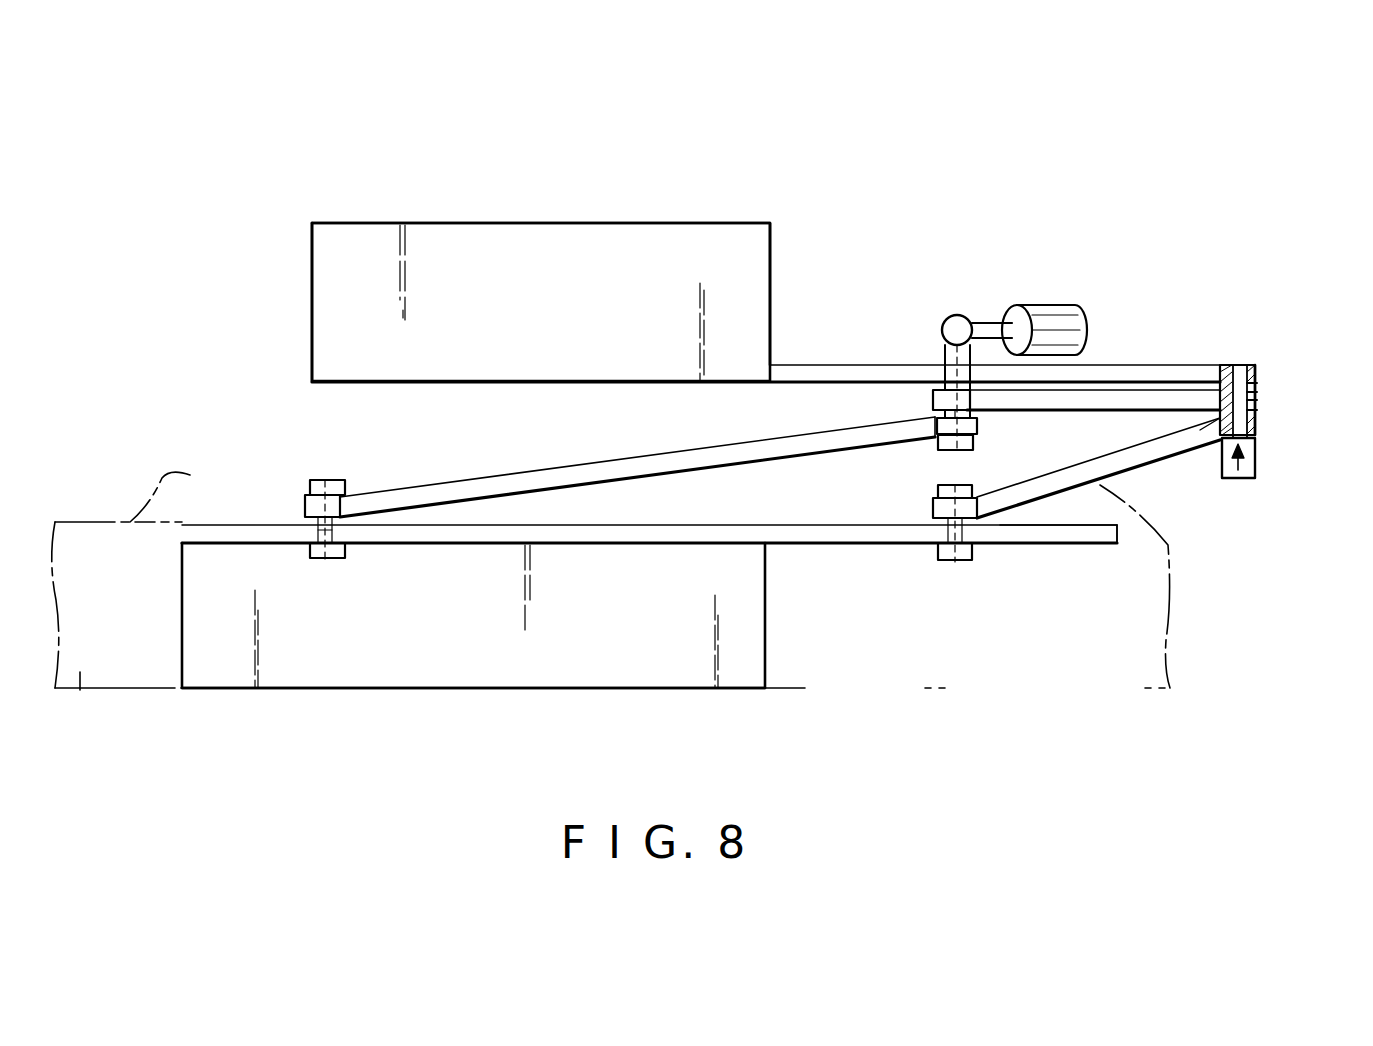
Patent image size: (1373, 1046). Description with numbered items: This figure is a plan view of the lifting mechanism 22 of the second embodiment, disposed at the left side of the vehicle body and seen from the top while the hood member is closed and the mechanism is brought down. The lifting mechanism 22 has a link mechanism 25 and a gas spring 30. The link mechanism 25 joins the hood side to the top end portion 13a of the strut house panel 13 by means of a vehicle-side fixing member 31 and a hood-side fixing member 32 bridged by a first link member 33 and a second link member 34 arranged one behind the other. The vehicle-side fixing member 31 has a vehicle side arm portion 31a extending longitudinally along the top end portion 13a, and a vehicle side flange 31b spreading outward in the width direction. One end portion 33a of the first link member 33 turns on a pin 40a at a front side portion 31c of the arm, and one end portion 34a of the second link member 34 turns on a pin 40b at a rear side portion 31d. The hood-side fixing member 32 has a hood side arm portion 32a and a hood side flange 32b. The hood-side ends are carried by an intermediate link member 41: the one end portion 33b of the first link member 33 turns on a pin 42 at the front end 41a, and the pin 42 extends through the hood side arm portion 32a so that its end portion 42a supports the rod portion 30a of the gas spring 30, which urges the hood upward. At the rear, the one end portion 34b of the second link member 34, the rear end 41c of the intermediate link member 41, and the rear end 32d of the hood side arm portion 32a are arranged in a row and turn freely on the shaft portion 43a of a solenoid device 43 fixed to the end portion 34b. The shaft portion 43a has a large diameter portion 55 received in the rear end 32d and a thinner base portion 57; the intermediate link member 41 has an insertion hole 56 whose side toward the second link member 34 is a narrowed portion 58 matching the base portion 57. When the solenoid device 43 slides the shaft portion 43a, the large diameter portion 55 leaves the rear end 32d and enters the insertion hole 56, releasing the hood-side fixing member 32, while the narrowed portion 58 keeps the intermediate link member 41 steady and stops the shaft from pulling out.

The lifting mechanism 22 is at (822, 142).
The link mechanism 25 is at (657, 264).
The hood-side fixing member 32 is at (532, 260).
The hood side arm portion 32a is at (812, 370).
The hood side flange 32b is at (447, 240).
The rear end of hood side arm portion 32d is at (1222, 365).
The intermediate link member 41 is at (1140, 388).
The front end of intermediate link member 41a is at (938, 395).
The rear end of intermediate link member 41c is at (1258, 402).
The pin 42 is at (950, 452).
The end portion of pin 42a is at (955, 318).
The gas spring 30 is at (1052, 308).
The rod portion 30a is at (993, 328).
The first link member 33 is at (531, 480).
The one end portion of first link member 33a is at (303, 505).
The one end portion of first link member 33b is at (980, 426).
The second link member 34 is at (1108, 446).
The one end portion of second link member 34a is at (932, 508).
The one end portion of second link member 34b is at (1258, 432).
The pin 40a is at (326, 557).
The pin 40b is at (950, 560).
The vehicle-side fixing member 31 is at (622, 657).
The vehicle side arm portion 31a is at (232, 530).
The vehicle side flange 31b is at (478, 676).
The front side portion 31c is at (340, 535).
The rear side portion 31d is at (1005, 540).
The strut house panel 13 is at (142, 690).
The top end portion 13a is at (80, 692).
The large diameter portion 55 is at (1240, 365).
The insertion hole 56 is at (1257, 393).
The base portion 57 is at (1258, 410).
The narrowed portion 58 is at (1202, 430).
The solenoid device 43 is at (1240, 478).
The shaft portion 43a is at (1257, 384).